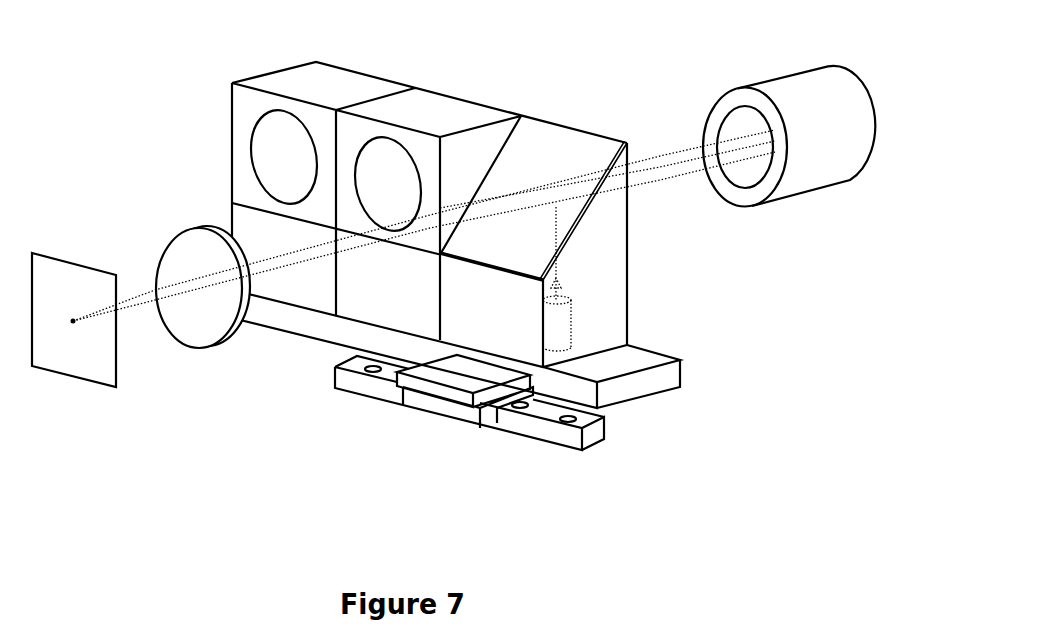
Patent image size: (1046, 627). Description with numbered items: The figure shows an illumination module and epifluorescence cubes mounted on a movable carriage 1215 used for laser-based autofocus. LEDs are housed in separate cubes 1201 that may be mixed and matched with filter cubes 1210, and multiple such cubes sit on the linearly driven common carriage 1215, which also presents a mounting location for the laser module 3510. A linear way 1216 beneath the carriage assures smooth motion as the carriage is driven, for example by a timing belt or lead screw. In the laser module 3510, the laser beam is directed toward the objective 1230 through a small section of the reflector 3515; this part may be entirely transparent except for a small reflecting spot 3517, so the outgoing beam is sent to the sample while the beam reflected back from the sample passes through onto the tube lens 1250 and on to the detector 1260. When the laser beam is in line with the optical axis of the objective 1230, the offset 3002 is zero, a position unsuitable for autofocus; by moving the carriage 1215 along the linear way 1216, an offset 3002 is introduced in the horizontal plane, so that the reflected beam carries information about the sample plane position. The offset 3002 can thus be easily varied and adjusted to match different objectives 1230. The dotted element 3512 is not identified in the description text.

The filter cube 1210 is at (358, 67).
The LED cube 1201 is at (372, 301).
The laser module 3510 is at (628, 282).
The reflector 3515 is at (551, 121).
The reflecting spot 3517 is at (557, 210).
The detector 3512 is at (572, 327).
The offset 3002 is at (637, 156).
The objective 1230 is at (781, 74).
The tube lens 1250 is at (190, 227).
The detector 1260 is at (67, 260).
The movable carriage 1215 is at (637, 384).
The linear way 1216 is at (383, 402).